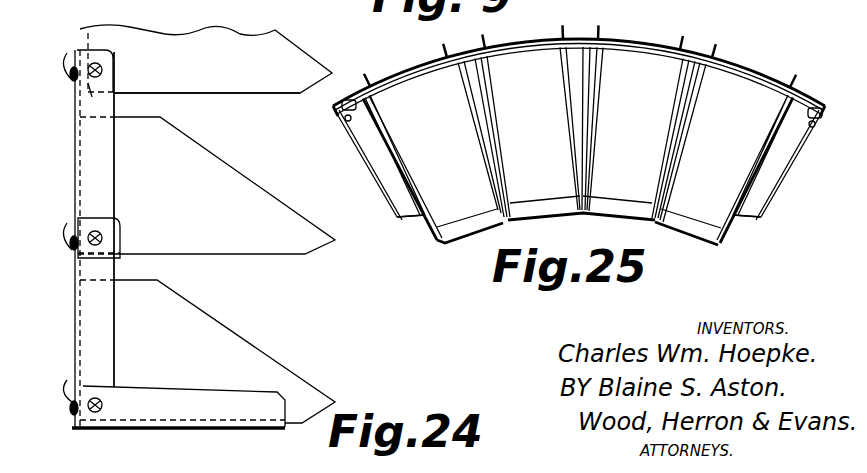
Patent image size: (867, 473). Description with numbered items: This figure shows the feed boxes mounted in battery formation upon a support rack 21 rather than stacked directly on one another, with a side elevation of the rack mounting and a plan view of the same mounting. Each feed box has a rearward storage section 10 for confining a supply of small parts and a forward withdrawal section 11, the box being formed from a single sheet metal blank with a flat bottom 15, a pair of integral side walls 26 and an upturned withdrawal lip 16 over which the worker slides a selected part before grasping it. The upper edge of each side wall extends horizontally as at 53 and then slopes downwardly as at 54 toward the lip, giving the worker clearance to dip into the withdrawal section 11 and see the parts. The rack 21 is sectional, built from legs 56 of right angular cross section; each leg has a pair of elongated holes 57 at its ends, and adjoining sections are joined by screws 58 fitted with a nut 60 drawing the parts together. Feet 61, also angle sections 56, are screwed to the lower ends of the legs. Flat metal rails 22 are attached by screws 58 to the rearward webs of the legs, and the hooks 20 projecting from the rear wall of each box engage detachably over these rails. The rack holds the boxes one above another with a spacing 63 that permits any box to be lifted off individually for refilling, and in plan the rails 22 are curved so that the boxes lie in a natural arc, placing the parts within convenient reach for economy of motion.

In FIG. 24, the storage section 10 is at (222, 190).
In FIG. 25, the storage section 10 is at (697, 80).
In FIG. 24, the withdrawal section 11 is at (318, 393).
In FIG. 25, the withdrawal section 11 is at (477, 218).
In FIG. 24, the bottom 15 is at (207, 257).
In FIG. 24, the withdrawal lip 16 is at (315, 250).
In FIG. 25, the withdrawal lip 16 is at (690, 225).
In FIG. 24, the hooks 20 is at (67, 54).
In FIG. 25, the hooks 20 is at (485, 40).
In FIG. 24, the rack 21 is at (75, 179).
In FIG. 25, the rack 21 is at (623, 40).
In FIG. 24, the rails 22 is at (88, 40).
In FIG. 25, the rails 22 is at (418, 63).
In FIG. 24, the side walls 26 is at (266, 196).
In FIG. 25, the side walls 26 is at (577, 110).
In FIG. 24, the horizontal upper edge 53 is at (140, 278).
In FIG. 24, the sloping edge 54 is at (228, 324).
In FIG. 24, the legs 56 is at (107, 157).
In FIG. 25, the legs 56 is at (342, 110).
In FIG. 24, the elongated holes 57 is at (101, 99).
In FIG. 24, the screws 58 is at (113, 68).
In FIG. 25, the screws 58 is at (350, 130).
In FIG. 24, the nut 60 is at (67, 415).
In FIG. 25, the nut 60 is at (346, 100).
In FIG. 24, the feet 61 is at (256, 400).
In FIG. 25, the feet 61 is at (407, 203).
In FIG. 24, the spacing 63 is at (152, 106).